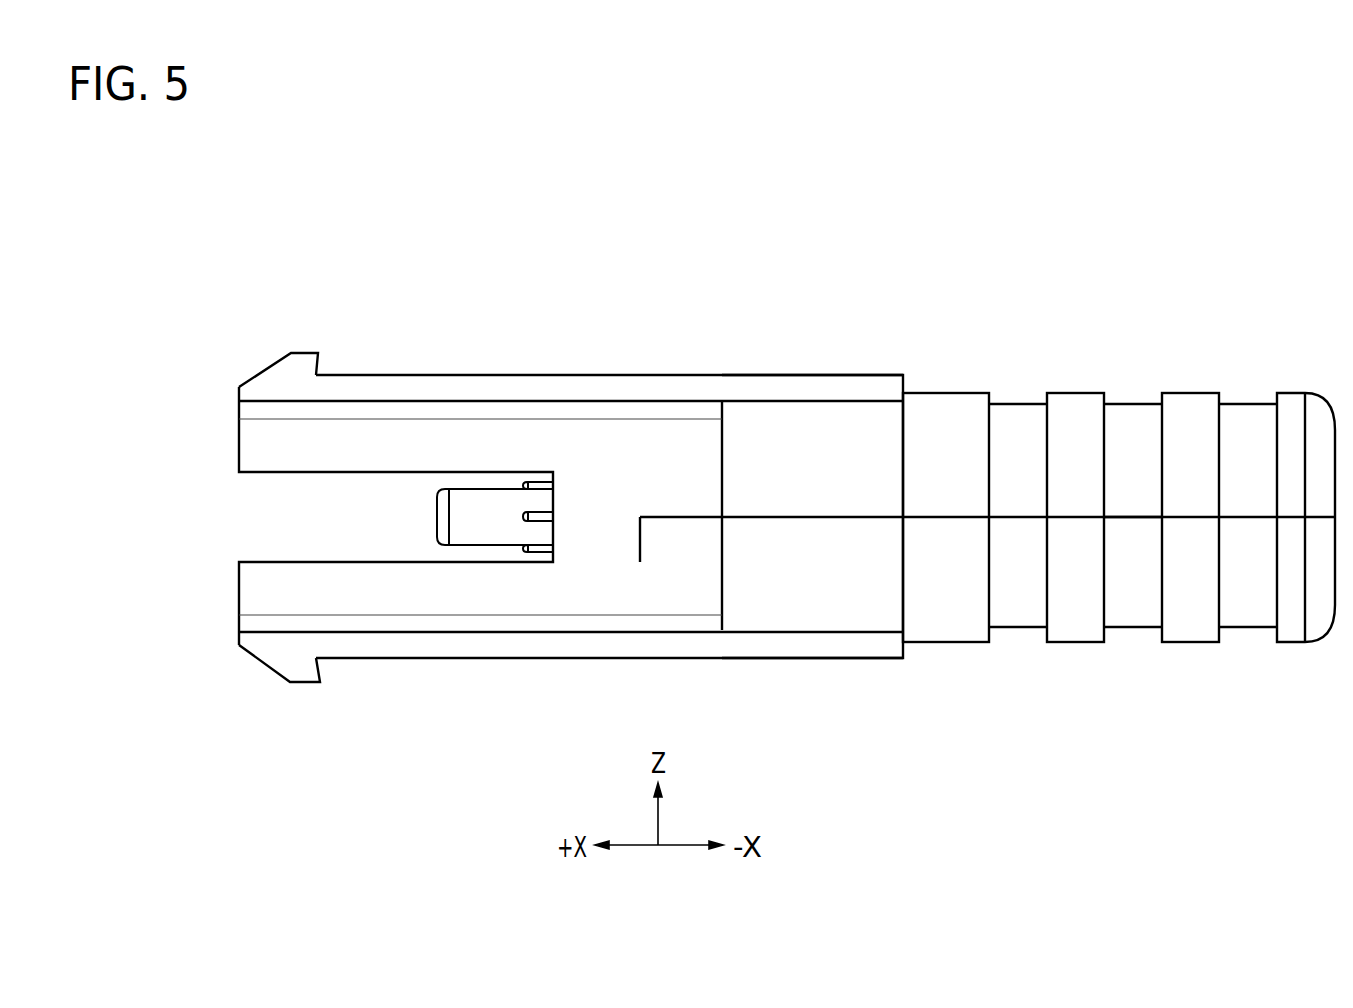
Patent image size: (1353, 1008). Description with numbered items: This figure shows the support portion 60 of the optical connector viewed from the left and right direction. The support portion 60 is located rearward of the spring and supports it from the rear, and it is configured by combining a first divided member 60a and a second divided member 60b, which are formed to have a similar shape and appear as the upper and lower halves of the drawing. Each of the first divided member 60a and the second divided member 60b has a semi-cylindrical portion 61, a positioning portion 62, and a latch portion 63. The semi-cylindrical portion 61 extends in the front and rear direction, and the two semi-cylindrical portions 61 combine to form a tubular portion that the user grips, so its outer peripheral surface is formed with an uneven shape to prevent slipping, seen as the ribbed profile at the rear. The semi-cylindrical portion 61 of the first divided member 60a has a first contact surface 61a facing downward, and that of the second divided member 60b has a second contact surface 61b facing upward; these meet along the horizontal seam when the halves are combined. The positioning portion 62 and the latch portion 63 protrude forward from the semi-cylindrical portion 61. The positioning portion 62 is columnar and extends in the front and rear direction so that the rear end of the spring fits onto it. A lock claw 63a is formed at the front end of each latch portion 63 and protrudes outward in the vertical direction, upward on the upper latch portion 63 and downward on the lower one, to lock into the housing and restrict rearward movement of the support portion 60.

The support portion 60 is at (222, 268).
The first divided member 60a is at (872, 363).
The second divided member 60b is at (872, 670).
The semi-cylindrical portion 61 is at (1077, 410).
The first contact surface 61a is at (1144, 519).
The second contact surface 61b is at (1121, 517).
The positioning portion 62 is at (486, 505).
The latch portion 63 is at (407, 380).
The lock claw 63a is at (305, 357).